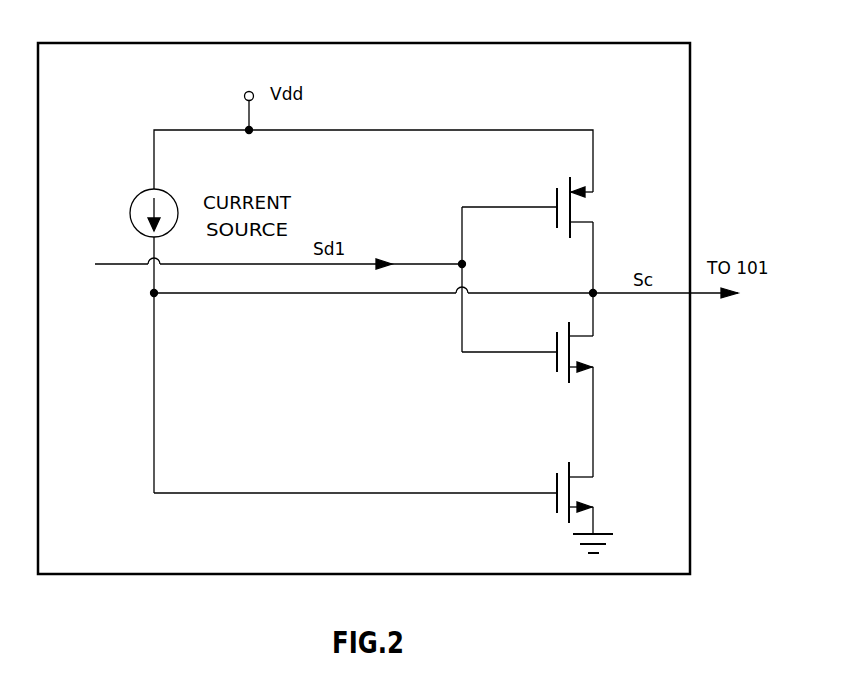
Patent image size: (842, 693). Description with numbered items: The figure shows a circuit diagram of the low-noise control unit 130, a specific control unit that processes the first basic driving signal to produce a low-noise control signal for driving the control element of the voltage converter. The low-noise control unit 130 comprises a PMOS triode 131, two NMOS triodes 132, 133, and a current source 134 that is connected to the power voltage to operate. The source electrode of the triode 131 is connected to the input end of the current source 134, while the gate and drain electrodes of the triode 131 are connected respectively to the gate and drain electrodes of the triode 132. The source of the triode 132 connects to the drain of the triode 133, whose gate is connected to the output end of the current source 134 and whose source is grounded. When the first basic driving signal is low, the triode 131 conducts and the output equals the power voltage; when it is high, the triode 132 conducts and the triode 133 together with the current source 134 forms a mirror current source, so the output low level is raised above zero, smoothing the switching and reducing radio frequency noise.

The low-noise control unit 130 is at (110, 92).
The triode 131 is at (598, 197).
The triode 132 is at (598, 352).
The triode 133 is at (396, 492).
The current source 134 is at (130, 213).